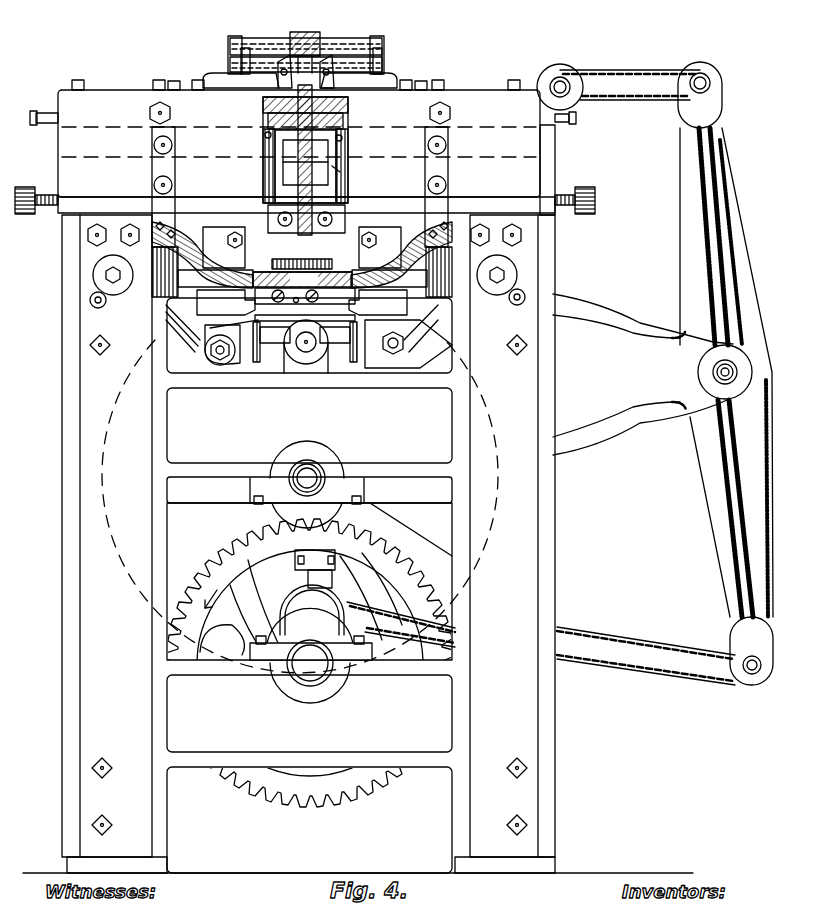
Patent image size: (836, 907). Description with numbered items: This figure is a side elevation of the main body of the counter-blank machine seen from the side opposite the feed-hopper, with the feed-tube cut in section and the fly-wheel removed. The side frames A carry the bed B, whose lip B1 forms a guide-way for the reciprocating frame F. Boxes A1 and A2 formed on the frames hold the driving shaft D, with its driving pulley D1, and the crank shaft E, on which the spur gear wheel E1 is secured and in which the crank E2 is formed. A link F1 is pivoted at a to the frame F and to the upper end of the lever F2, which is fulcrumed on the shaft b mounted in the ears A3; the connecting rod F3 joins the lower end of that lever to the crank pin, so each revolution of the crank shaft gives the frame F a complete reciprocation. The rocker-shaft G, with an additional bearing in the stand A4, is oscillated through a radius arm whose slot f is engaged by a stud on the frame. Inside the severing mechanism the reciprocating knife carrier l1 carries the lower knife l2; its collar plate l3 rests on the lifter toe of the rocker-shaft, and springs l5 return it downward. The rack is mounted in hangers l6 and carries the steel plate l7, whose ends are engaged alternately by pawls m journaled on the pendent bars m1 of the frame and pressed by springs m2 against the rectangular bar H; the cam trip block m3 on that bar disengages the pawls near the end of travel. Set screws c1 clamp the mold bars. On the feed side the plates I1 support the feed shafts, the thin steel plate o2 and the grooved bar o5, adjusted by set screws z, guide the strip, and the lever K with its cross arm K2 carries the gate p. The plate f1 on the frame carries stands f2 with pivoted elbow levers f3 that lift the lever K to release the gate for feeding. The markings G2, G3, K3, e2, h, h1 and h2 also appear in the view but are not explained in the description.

The side frame A is at (122, 688).
The box A1 is at (335, 458).
The box A2 is at (311, 655).
The ear A3 is at (616, 386).
The stand A4 is at (313, 354).
The bed B is at (371, 193).
The lip B1 is at (548, 150).
The driving shaft D is at (307, 478).
The driving pulley D1 is at (198, 497).
The crank shaft E is at (310, 663).
The spur gear wheel E1 is at (310, 668).
The crank E2 is at (312, 592).
The reciprocating frame F is at (306, 146).
The link F1 is at (641, 85).
The lever F2 is at (726, 372).
The connecting rod F3 is at (560, 643).
The rocker-shaft G is at (302, 352).
The bolt G2 is at (371, 343).
The lug G3 is at (328, 344).
The rectangular bar H is at (267, 272).
The plate I1 is at (303, 96).
The lever K is at (298, 44).
The cross arm K2 is at (345, 42).
The roller block K3 is at (310, 32).
The pivot a is at (563, 76).
The shaft b is at (712, 372).
The set screw c1 is at (24, 214).
The set screw e2 is at (312, 110).
The slot f is at (388, 92).
The plate f1 is at (130, 96).
The stand f2 is at (324, 76).
The elbow lever f3 is at (400, 72).
The housing h is at (349, 131).
The inner housing part h1 is at (341, 172).
The housing cap h2 is at (345, 106).
The reciprocating knife carrier l1 is at (302, 328).
The lower knife l2 is at (335, 335).
The collar or disk like plate l3 is at (275, 335).
The spring l5 is at (283, 339).
The hanger l6 is at (302, 302).
The steel plate l7 is at (305, 296).
The pawl m is at (302, 279).
The pendent bar m1 is at (301, 187).
The spring m2 is at (302, 259).
The cam trip block m3 is at (302, 279).
The thin steel plate o2 is at (265, 137).
The bar o5 is at (343, 138).
The gate or frame p is at (241, 58).
The set screw z is at (263, 125).